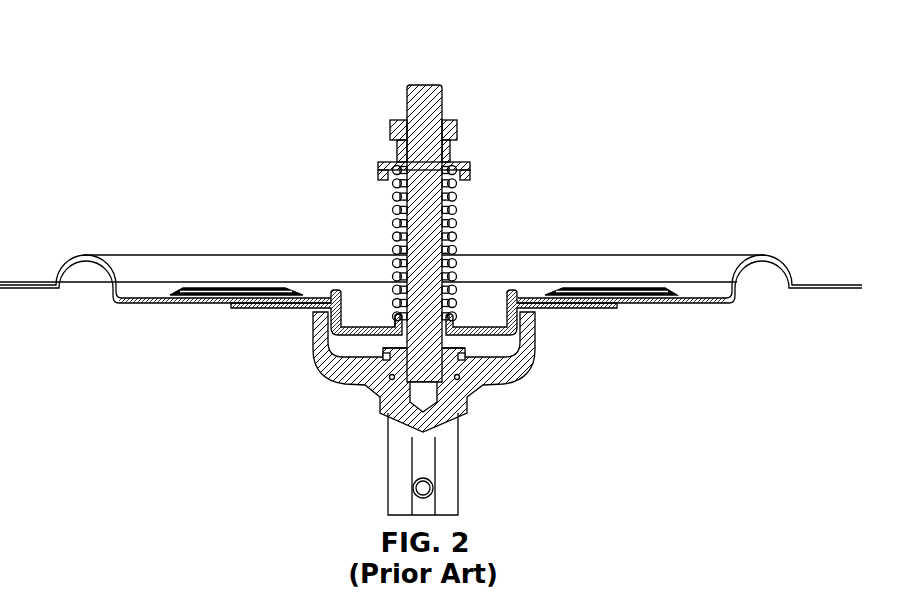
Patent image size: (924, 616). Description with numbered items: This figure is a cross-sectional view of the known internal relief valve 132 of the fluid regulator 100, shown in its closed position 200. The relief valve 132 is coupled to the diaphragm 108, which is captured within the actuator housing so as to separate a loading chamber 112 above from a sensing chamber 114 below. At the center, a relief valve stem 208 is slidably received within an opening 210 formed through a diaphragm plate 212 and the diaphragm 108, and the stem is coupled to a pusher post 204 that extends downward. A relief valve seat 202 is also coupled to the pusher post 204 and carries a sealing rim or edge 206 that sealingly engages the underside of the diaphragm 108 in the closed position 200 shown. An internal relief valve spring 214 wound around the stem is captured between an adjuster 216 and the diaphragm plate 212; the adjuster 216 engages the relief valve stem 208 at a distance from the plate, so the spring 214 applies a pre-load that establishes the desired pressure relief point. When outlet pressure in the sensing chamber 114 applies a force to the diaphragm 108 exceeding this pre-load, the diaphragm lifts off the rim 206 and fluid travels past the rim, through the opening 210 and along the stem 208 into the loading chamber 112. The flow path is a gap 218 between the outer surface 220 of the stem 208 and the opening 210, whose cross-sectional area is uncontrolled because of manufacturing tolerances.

The fluid regulator 100 is at (113, 53).
The closed position 200 is at (205, 108).
The loading chamber 112 is at (682, 146).
The sensing chamber 114 is at (100, 412).
The diaphragm 108 is at (127, 253).
The internal relief valve 132 is at (577, 425).
The relief valve seat 202 is at (527, 337).
The pusher post 204 is at (458, 475).
The sealing rim or edge 206 is at (300, 313).
The relief valve stem 208 is at (442, 92).
The opening 210 is at (394, 318).
The diaphragm plate 212 is at (538, 290).
The internal relief valve spring 214 is at (457, 198).
The adjuster 216 is at (457, 128).
The gap 218 is at (388, 345).
The outer surface 220 is at (440, 242).